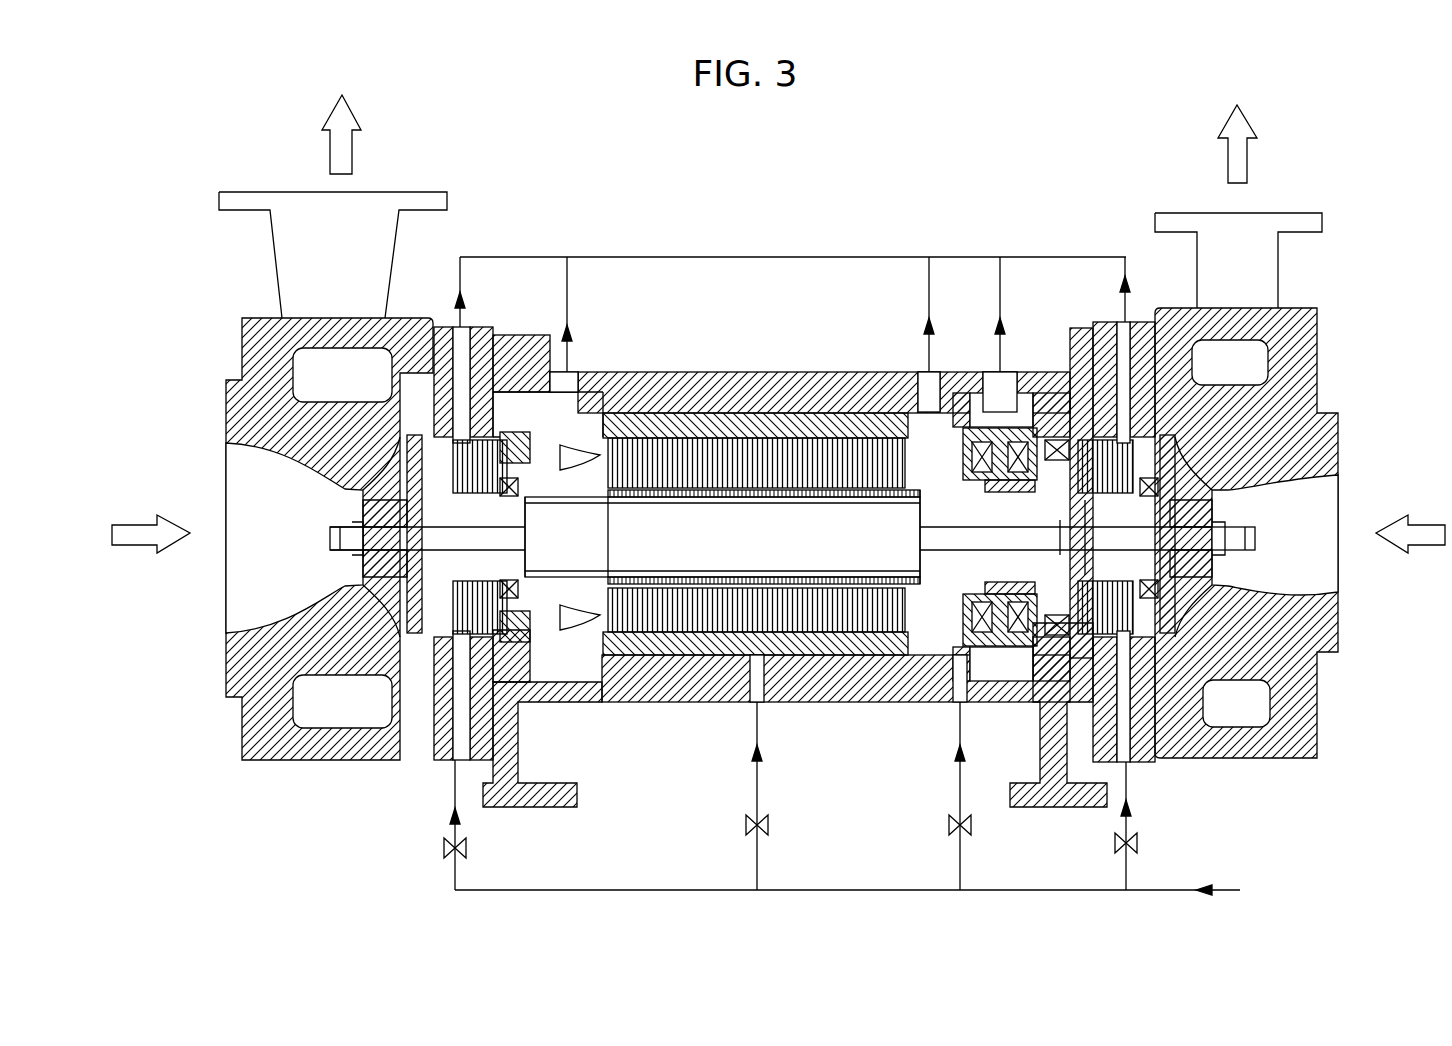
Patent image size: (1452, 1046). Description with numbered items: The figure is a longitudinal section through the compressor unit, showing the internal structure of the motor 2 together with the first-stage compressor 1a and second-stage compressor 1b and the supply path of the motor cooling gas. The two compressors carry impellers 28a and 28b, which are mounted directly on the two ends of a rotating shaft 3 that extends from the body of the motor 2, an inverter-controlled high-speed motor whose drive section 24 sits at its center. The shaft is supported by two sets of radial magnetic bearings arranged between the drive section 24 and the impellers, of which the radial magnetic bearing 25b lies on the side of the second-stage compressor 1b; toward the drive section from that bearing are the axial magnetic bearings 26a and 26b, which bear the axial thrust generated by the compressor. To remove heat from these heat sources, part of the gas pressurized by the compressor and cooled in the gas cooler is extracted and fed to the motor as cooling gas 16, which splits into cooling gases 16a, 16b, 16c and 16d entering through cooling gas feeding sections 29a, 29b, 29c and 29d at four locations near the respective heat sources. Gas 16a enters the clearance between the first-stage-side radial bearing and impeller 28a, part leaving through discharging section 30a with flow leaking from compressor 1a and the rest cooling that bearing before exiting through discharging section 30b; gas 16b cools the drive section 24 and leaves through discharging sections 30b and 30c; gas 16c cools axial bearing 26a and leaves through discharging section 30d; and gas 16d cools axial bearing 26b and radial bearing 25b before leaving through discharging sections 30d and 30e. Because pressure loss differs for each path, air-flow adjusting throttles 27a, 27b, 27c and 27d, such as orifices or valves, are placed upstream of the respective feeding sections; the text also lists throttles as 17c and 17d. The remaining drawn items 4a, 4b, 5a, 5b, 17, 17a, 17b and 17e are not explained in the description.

The first-stage compressor 1a is at (305, 762).
The second-stage compressor 1b is at (1280, 760).
The motor 2 is at (603, 702).
The rotating shaft 3 is at (652, 540).
The suction inlet 4a is at (151, 517).
The suction inlet 4b is at (1406, 512).
The discharge outlet 5a is at (365, 134).
The discharge outlet 5b is at (1255, 139).
The cooling gas 16 is at (850, 904).
The cooling gas 16a is at (430, 825).
The cooling gas 16b is at (783, 796).
The cooling gas 16c is at (988, 796).
The cooling gas 16d is at (1153, 826).
The cooling liquid return line 17 is at (757, 257).
The cooling liquid return branch 17a is at (488, 293).
The cooling liquid return branch 17b is at (593, 314).
The air-flow adjusting throttle 17c is at (906, 314).
The air-flow adjusting throttle 17d is at (976, 314).
The cooling liquid return branch 17e is at (1102, 289).
The drive section 24 is at (768, 462).
The radial magnetic bearing 25b is at (1118, 490).
The axial magnetic bearing 26a is at (972, 478).
The axial magnetic bearing 26b is at (1020, 480).
The air-flow adjusting throttle 27a is at (466, 850).
The air-flow adjusting throttle 27b is at (768, 828).
The air-flow adjusting throttle 27c is at (971, 828).
The air-flow adjusting throttle 27d is at (1137, 848).
The impeller 28a is at (345, 497).
The impeller 28b is at (1238, 503).
The cooling gas feeding section 29a is at (448, 765).
The cooling gas feeding section 29b is at (757, 702).
The cooling gas feeding section 29c is at (960, 702).
The cooling gas feeding section 29d is at (1140, 762).
The discharging section 30a is at (447, 318).
The discharging section 30b is at (555, 372).
The discharging section 30c is at (925, 372).
The discharging section 30d is at (1005, 372).
The discharging section 30e is at (1133, 320).